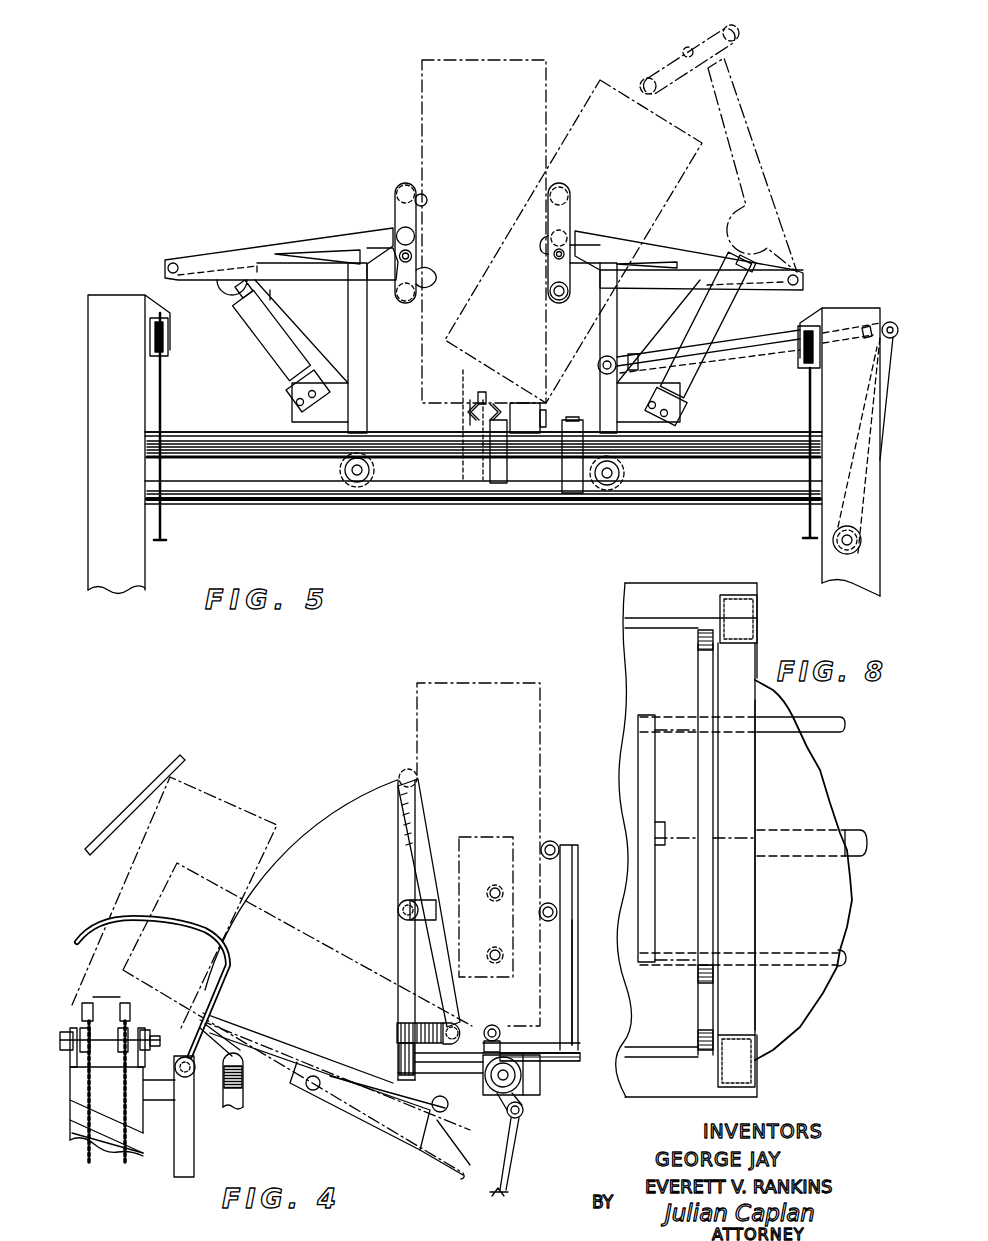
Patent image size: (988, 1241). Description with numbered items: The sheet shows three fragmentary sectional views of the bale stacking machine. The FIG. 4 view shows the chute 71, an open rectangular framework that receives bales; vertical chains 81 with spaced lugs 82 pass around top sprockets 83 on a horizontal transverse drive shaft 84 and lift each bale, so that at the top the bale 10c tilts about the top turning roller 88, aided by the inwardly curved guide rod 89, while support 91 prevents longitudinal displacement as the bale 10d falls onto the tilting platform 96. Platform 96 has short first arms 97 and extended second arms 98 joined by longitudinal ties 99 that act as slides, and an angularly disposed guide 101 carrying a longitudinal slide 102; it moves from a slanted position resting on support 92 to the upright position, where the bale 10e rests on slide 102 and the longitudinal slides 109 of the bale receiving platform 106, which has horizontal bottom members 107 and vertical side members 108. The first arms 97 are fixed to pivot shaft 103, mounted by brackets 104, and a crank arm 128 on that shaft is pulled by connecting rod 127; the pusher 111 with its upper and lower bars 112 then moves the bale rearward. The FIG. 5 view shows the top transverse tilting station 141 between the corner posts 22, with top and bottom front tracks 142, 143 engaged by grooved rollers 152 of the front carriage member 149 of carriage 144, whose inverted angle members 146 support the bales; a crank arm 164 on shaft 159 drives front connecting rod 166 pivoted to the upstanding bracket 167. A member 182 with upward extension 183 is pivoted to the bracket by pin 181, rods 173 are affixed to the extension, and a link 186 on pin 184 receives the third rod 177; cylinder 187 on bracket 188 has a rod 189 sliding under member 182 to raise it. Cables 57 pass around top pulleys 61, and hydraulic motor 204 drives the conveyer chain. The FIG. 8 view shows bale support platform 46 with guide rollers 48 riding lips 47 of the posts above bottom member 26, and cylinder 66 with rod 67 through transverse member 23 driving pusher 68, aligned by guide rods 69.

In FIG. 5, the brackets 104 is at (513, 68).
In FIG. 4, the brackets 104 is at (540, 1078).
In FIG. 5, the vertical corner posts 22 is at (120, 431).
In FIG. 8, the vertical corner posts 22 is at (746, 630).
In FIG. 5, the top pulleys 61 is at (167, 348).
In FIG. 5, the crank arm 164 is at (879, 370).
In FIG. 5, the cables 57 is at (163, 521).
In FIG. 5, the horizontal longitudinal shaft 159 is at (836, 545).
In FIG. 5, the top transverse tilting station 141 is at (477, 513).
In FIG. 5, the top front track 142 is at (245, 420).
In FIG. 5, the front transverse horizontal carriage member 149 is at (401, 480).
In FIG. 5, the bottom front track 143 is at (252, 502).
In FIG. 5, the grooved rollers 152 is at (358, 488).
In FIG. 5, the upstanding L-shaped bracket 167 is at (365, 372).
In FIG. 5, the inwardly extending member 182 is at (347, 236).
In FIG. 5, the pin 181 is at (174, 264).
In FIG. 5, the rods 173 is at (410, 196).
In FIG. 5, the third rod 177 is at (408, 305).
In FIG. 5, the upward extension 183 is at (570, 223).
In FIG. 5, the pin 184 is at (547, 257).
In FIG. 5, the link 186 is at (546, 290).
In FIG. 5, the double-acting cylinder 187 is at (268, 350).
In FIG. 5, the bracket 188 is at (292, 405).
In FIG. 5, the rod 189 is at (236, 302).
In FIG. 5, the front connecting rod 166 is at (750, 362).
In FIG. 5, the inverted angle members 146 is at (507, 397).
In FIG. 5, the transversely movable carriage 144 is at (460, 418).
In FIG. 5, the hydraulic motor 204 is at (541, 413).
In FIG. 8, the bottom longitudinal horizontal member 26 is at (698, 584).
In FIG. 8, the lip 47 is at (722, 648).
In FIG. 8, the grooved guide roller 48 is at (698, 640).
In FIG. 8, the pusher 68 is at (697, 792).
In FIG. 8, the bale support platform 46 is at (668, 820).
In FIG. 8, the guide rods 69 is at (830, 732).
In FIG. 8, the longitudinal hydraulic cylinder 66 is at (857, 828).
In FIG. 8, the rod 67 is at (735, 833).
In FIG. 8, the horizontal transverse member 23 is at (754, 924).
In FIG. 4, the bale in upright position 10e is at (496, 688).
In FIG. 4, the bale tilted at top of chute 10c is at (208, 796).
In FIG. 4, the bale in downward-inward position 10d is at (298, 930).
In FIG. 4, the tilting platform 96 is at (385, 940).
In FIG. 4, the inwardly curved guide rod 89 is at (127, 820).
In FIG. 4, the support 91 is at (192, 925).
In FIG. 4, the chute 71 is at (122, 1182).
In FIG. 4, the vertical chains 81 is at (107, 1145).
In FIG. 4, the lugs 82 is at (105, 1004).
In FIG. 4, the top sprockets 83 is at (116, 1068).
In FIG. 4, the horizontal transverse drive shaft 84 is at (176, 1030).
In FIG. 4, the top turning roller 88 is at (204, 1074).
In FIG. 4, the support 92 is at (244, 1100).
In FIG. 4, the extended second arms 98 is at (398, 1000).
In FIG. 4, the longitudinal ties 99 is at (422, 781).
In FIG. 4, the angularly disposed guide 101 is at (424, 834).
In FIG. 4, the pusher 111 is at (500, 832).
In FIG. 4, the upper and lower bars 112 is at (494, 947).
In FIG. 4, the longitudinal slides 109 is at (544, 860).
In FIG. 4, the vertical side members 108 is at (574, 888).
In FIG. 4, the bale receiving platform 106 is at (575, 950).
In FIG. 4, the longitudinal slide 102 is at (456, 1024).
In FIG. 4, the short first arms 97 is at (452, 1070).
In FIG. 4, the horizontal bottom members 107 is at (557, 1054).
In FIG. 4, the pivot shaft 103 is at (526, 1086).
In FIG. 4, the crank arm 128 is at (500, 1116).
In FIG. 4, the connecting rod 127 is at (502, 1191).